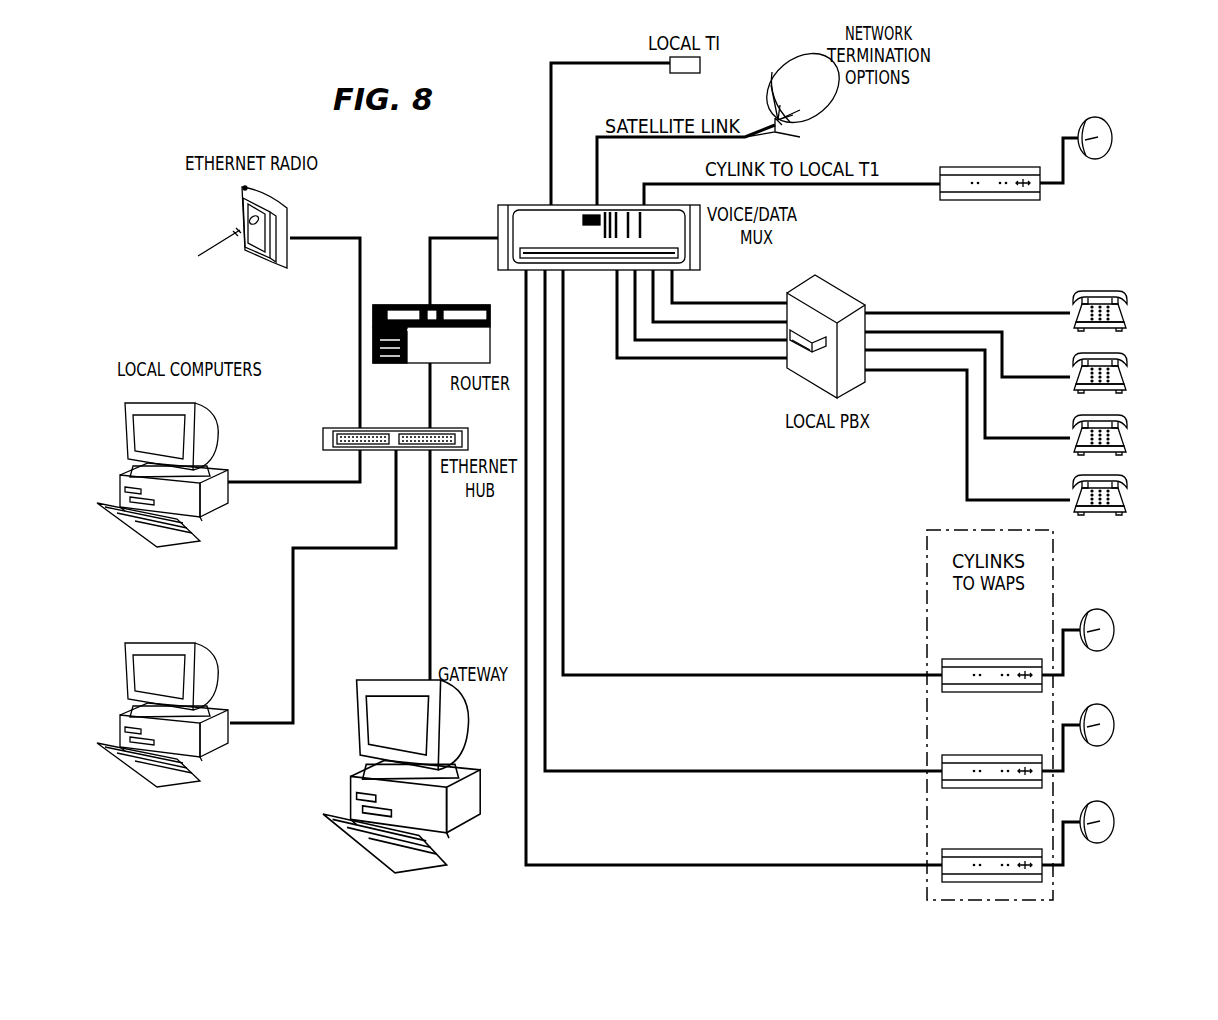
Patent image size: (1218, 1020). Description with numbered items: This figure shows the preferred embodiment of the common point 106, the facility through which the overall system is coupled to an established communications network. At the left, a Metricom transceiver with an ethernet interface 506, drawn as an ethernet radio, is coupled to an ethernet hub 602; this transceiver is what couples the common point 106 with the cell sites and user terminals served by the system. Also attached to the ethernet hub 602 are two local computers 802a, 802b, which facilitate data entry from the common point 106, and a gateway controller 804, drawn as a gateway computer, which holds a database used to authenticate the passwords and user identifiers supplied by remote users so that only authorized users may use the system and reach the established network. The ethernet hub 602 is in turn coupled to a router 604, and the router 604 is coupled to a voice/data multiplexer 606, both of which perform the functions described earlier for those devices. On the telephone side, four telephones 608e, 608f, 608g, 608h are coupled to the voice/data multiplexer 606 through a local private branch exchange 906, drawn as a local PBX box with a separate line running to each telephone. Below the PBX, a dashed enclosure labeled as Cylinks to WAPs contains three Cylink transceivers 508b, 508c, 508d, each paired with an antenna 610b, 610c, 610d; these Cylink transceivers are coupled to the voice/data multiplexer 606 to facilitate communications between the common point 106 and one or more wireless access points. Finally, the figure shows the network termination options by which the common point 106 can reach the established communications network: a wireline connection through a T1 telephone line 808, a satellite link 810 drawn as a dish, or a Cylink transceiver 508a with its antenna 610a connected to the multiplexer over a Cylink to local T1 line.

The common point 106 is at (1214, 881).
The Metricom transceiver with an ethernet interface 506 is at (248, 262).
The Cylink transceiver 508a is at (984, 167).
The Cylink transceiver 508b is at (984, 659).
The Cylink transceiver 508c is at (984, 755).
The Cylink transceiver 508d is at (984, 849).
The ethernet hub 602 is at (393, 428).
The router 604 is at (386, 305).
The voice/data multiplexer 606 is at (700, 240).
The telephone 608e is at (1128, 300).
The telephone 608f is at (1128, 362).
The telephone 608g is at (1128, 424).
The telephone 608h is at (1128, 484).
The Cylink transceiver antenna 610a is at (1112, 143).
The Cylink transceiver 610b is at (1114, 636).
The Cylink transceiver 610c is at (1114, 731).
The Cylink transceiver 610d is at (1114, 828).
The computer 802a is at (218, 680).
The computer 802b is at (218, 440).
The gateway controller 804 is at (392, 680).
The T1 telephone line 808 is at (685, 73).
The satellite link 810 is at (835, 92).
The local private branch exchange 906 is at (815, 277).